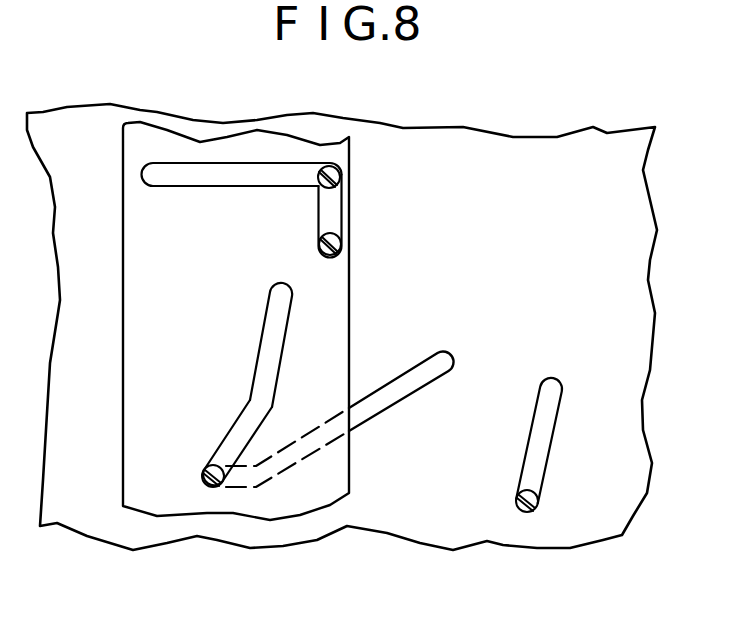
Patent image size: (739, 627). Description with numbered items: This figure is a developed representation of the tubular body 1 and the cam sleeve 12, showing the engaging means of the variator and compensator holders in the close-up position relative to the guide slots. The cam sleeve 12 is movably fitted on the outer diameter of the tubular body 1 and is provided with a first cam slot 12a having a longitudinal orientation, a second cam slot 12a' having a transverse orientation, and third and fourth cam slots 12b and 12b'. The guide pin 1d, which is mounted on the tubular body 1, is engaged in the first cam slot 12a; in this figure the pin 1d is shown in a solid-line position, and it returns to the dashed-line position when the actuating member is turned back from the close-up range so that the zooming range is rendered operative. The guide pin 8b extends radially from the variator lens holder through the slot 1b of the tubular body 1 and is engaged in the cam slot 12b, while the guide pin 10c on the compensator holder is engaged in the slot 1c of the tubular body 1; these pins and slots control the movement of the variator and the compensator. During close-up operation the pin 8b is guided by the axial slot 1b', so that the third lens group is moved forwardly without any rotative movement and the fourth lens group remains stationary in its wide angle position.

The tubular body 1 is at (515, 163).
The cam sleeve 12 is at (203, 150).
The first cam slot 12a is at (242, 194).
The second cam slot 12a' is at (307, 216).
The guide pin 1d is at (340, 233).
The third cam slot 12b is at (250, 345).
The fourth cam slot 12b' is at (255, 442).
The guide pin 8b is at (212, 465).
The slot 1b is at (401, 366).
The axial slot 1b' is at (286, 494).
The slot 1c is at (548, 386).
The guide pin 10c is at (539, 498).